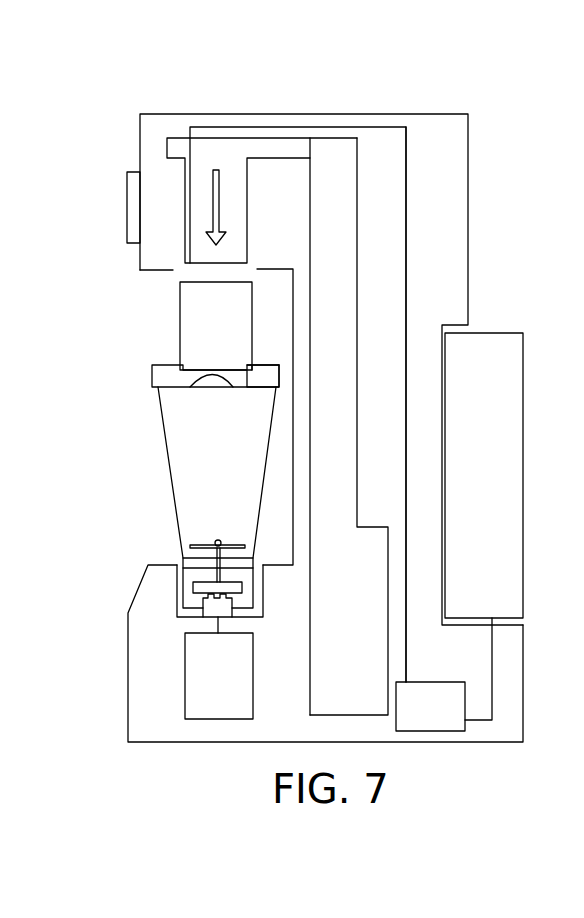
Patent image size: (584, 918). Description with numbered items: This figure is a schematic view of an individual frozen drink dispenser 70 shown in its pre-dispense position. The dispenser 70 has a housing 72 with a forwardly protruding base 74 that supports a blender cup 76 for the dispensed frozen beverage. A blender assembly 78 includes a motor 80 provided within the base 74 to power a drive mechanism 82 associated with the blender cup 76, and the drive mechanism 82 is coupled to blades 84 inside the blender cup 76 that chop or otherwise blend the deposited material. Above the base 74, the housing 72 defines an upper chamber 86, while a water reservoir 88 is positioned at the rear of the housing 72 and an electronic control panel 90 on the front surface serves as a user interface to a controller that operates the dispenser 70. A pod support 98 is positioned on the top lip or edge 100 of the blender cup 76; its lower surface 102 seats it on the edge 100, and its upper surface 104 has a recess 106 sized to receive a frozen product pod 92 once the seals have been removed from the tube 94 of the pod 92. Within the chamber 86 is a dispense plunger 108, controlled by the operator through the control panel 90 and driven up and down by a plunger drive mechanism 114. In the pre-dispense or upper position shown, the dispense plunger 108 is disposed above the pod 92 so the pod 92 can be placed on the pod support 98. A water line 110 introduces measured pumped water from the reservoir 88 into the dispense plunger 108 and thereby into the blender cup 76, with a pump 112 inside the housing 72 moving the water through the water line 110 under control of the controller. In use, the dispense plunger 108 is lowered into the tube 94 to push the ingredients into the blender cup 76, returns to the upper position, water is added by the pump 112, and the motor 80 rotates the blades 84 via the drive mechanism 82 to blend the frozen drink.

The individual frozen drink dispenser 70 is at (328, 100).
The housing 72 is at (468, 212).
The forwardly protruding base 74 is at (128, 637).
The blender cup 76 is at (170, 482).
The blender assembly 78 is at (136, 574).
The motor 80 is at (183, 665).
The drive mechanism 82 is at (203, 598).
The blades 84 is at (193, 543).
The upper chamber 86 is at (160, 125).
The water reservoir 88 is at (523, 362).
The electronic control panel 90 is at (127, 198).
The frozen product pod 92 is at (180, 330).
The tube 94 is at (581, 485).
The pod support 98 is at (152, 377).
The top lip or edge 100 is at (197, 386).
The lower surface 102 is at (275, 387).
The upper surface 104 is at (267, 363).
The recess 106 is at (253, 365).
The dispense plunger 108 is at (167, 150).
The water line 110 is at (406, 148).
The pump 112 is at (467, 698).
The plunger drive mechanism 114 is at (356, 207).